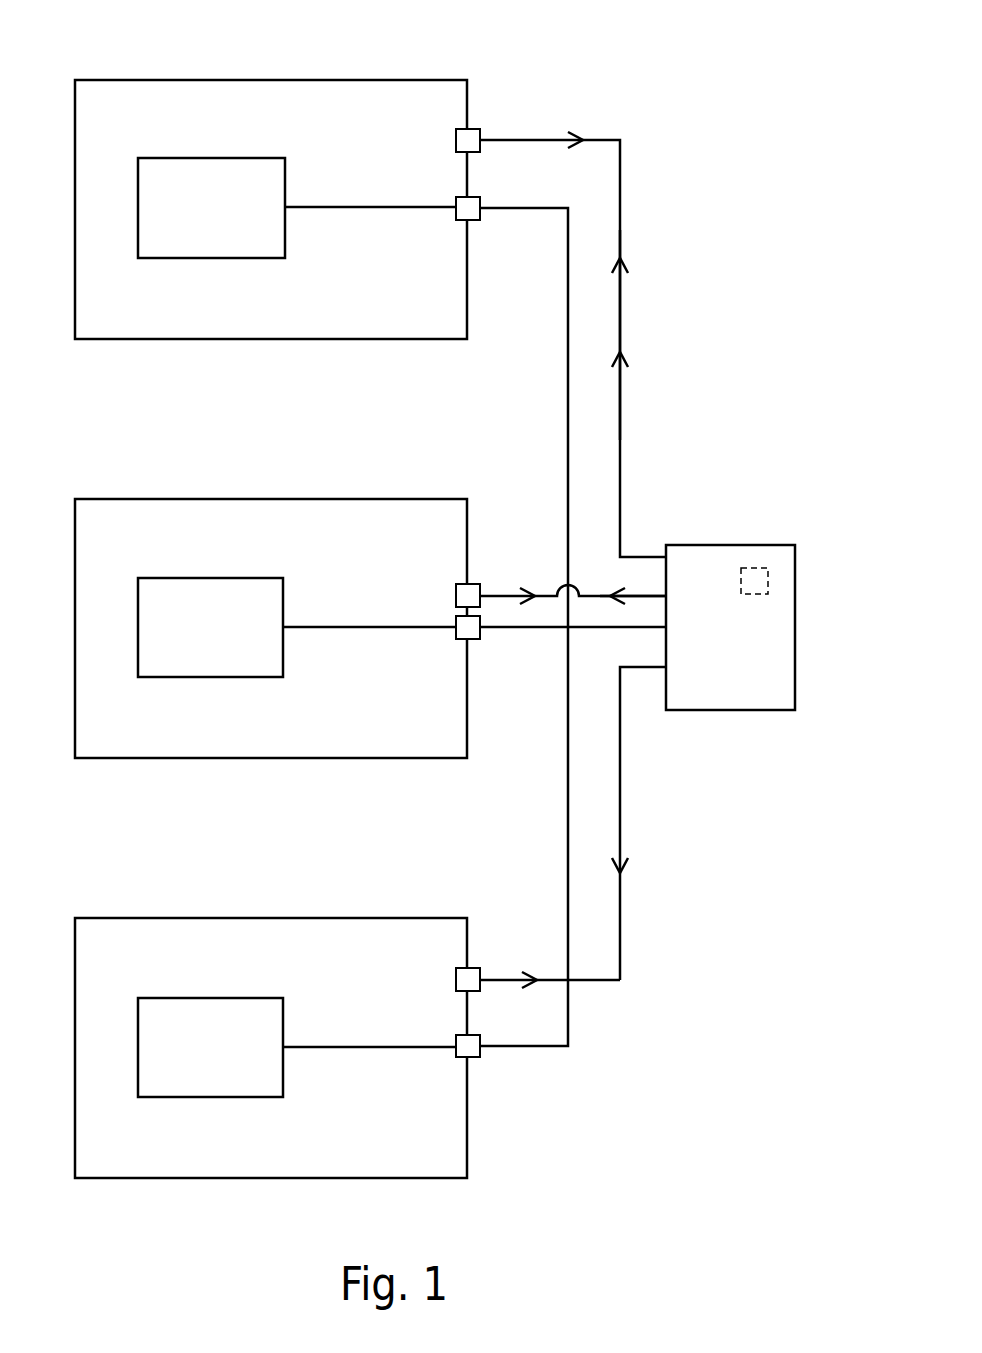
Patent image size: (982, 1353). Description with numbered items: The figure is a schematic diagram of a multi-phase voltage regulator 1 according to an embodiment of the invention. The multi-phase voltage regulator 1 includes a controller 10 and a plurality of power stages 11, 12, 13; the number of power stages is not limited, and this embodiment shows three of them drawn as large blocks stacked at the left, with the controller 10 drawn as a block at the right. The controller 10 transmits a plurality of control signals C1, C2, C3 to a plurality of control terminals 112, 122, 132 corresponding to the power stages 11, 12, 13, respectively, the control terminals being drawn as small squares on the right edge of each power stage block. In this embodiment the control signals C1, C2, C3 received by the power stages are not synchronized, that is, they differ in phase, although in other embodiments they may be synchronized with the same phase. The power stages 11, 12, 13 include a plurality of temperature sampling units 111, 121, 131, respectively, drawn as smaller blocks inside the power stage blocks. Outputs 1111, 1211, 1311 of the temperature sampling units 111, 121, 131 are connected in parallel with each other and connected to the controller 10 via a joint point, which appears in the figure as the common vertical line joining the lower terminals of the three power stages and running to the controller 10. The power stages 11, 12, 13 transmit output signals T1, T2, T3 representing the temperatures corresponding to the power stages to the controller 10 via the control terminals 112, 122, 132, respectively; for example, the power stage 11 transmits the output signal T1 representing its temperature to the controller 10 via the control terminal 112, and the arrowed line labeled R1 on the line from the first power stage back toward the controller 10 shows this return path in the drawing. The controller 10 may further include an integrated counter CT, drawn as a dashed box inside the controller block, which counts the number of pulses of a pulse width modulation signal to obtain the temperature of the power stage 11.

The multi-phase voltage regulator 1 is at (701, 68).
The controller 10 is at (688, 545).
The integrated counter CT is at (757, 568).
The power stage 11 is at (120, 80).
The temperature sampling unit 111 is at (207, 158).
The control terminal 112 is at (456, 140).
The output 1111 is at (458, 221).
The power stage 12 is at (120, 499).
The temperature sampling unit 121 is at (207, 578).
The control terminal 122 is at (456, 596).
The output 1211 is at (465, 639).
The power stage 13 is at (120, 918).
The temperature sampling unit 131 is at (207, 998).
The control terminal 132 is at (456, 980).
The output 1311 is at (465, 1058).
The output signal T1 is at (549, 132).
The output signal T2 is at (505, 586).
The output signal T3 is at (505, 970).
The return signal R1 is at (622, 303).
The control signal C1 is at (622, 396).
The control signal C2 is at (640, 594).
The control signal C3 is at (622, 830).